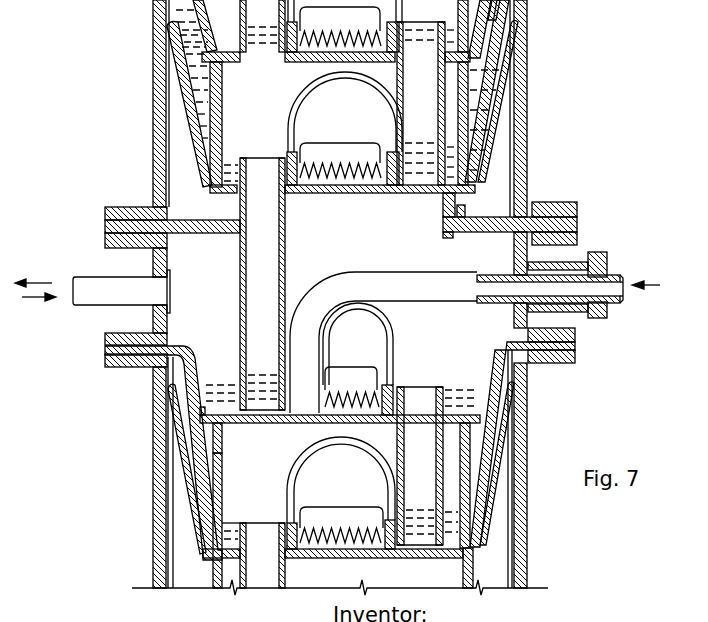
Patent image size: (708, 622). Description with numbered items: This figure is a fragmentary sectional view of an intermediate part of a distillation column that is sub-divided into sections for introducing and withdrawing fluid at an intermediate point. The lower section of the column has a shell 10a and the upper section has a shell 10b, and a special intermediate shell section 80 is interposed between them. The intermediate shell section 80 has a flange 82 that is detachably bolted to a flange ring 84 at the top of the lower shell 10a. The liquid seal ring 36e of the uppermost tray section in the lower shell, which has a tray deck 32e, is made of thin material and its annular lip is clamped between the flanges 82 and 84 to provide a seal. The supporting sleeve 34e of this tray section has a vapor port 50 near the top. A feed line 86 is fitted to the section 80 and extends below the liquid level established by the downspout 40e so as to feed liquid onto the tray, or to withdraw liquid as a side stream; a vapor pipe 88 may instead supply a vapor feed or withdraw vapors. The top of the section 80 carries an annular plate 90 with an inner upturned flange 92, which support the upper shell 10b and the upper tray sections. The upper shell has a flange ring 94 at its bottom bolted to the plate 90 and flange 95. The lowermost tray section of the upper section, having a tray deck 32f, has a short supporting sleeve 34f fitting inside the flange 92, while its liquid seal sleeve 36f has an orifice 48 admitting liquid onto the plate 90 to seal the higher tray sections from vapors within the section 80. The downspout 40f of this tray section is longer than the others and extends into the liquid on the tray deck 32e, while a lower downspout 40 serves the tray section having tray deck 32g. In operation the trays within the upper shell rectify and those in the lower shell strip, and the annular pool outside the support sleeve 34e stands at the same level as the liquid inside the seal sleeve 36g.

The lower shell section 10a is at (528, 417).
The upper shell section 10b is at (528, 100).
The liquid seal sleeve 36f is at (182, 70).
The orifice 48 is at (205, 172).
The flange ring 94 is at (537, 203).
The flange 95 is at (578, 231).
The vapor pipe 88 is at (92, 257).
The intermediate shell section 80 is at (160, 264).
The feed line 86 is at (409, 257).
The tray deck 32f is at (297, 203).
The supporting sleeve 34f is at (443, 203).
The upturned flange 92 is at (444, 230).
The annular plate 90 is at (475, 230).
The downspout 40f is at (285, 247).
The flange 82 is at (577, 334).
The flange ring 84 is at (577, 358).
The liquid seal ring 36e is at (181, 348).
The downspout 40e is at (402, 386).
The vapor port 50 is at (222, 440).
The tray deck 32e is at (311, 424).
The supporting sleeve 34e is at (222, 475).
The downspout 40 is at (283, 573).
The tray deck 32g is at (401, 557).
The liquid seal sleeve 36g is at (474, 549).